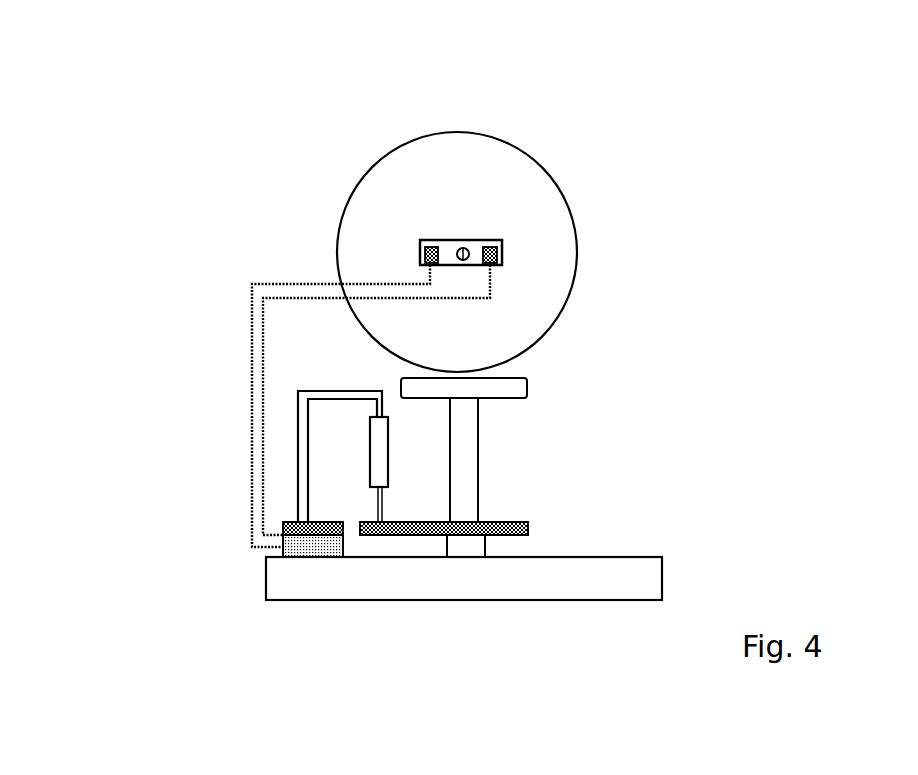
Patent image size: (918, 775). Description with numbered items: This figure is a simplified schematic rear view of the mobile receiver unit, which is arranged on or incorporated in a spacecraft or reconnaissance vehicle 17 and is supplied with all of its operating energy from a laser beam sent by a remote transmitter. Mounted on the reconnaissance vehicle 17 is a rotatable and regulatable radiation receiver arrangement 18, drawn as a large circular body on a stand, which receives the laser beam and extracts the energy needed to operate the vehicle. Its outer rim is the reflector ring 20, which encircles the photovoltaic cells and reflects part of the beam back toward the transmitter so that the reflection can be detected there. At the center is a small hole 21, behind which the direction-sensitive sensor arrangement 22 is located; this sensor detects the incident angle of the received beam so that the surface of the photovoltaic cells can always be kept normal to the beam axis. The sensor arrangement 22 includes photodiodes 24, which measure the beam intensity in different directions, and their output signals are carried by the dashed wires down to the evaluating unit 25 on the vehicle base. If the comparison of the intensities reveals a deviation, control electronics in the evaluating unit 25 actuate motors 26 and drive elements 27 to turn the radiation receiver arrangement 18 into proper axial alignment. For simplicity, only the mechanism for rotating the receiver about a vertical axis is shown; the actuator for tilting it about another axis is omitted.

The reconnaissance vehicle 17 is at (620, 562).
The radiation receiver arrangement 18 is at (542, 338).
The reflector ring 20 is at (390, 167).
The hole 21 is at (458, 247).
The direction-sensitive sensor arrangement 22 is at (475, 240).
The photodiodes 24 is at (422, 255).
The evaluating unit 25 is at (300, 533).
The motors 26 is at (375, 430).
The drive elements 27 is at (495, 517).